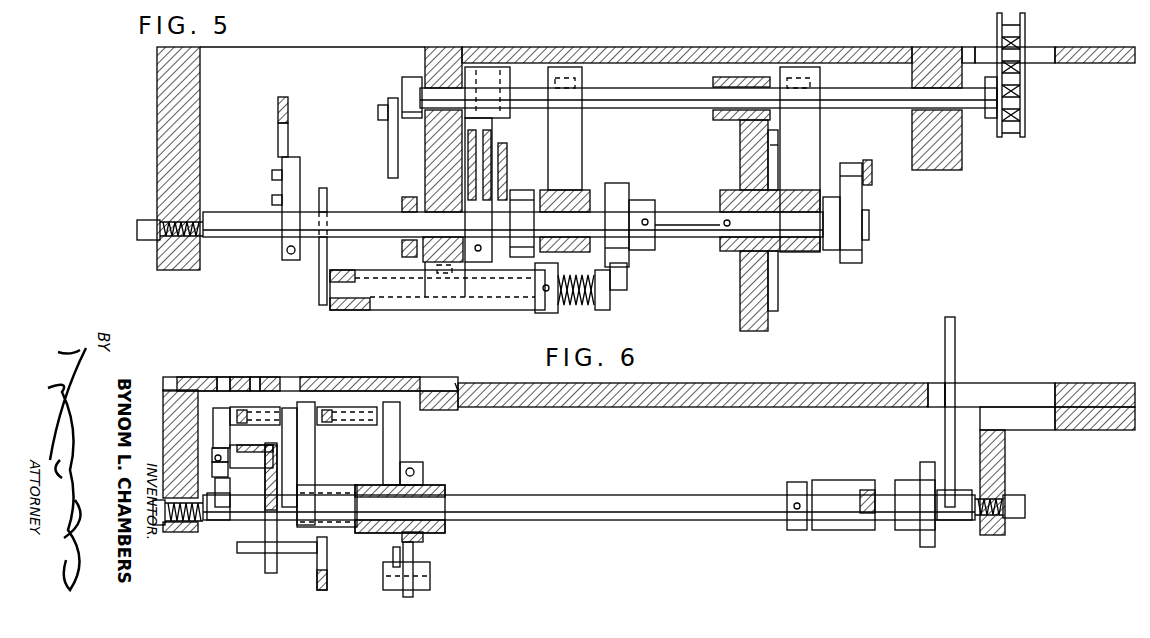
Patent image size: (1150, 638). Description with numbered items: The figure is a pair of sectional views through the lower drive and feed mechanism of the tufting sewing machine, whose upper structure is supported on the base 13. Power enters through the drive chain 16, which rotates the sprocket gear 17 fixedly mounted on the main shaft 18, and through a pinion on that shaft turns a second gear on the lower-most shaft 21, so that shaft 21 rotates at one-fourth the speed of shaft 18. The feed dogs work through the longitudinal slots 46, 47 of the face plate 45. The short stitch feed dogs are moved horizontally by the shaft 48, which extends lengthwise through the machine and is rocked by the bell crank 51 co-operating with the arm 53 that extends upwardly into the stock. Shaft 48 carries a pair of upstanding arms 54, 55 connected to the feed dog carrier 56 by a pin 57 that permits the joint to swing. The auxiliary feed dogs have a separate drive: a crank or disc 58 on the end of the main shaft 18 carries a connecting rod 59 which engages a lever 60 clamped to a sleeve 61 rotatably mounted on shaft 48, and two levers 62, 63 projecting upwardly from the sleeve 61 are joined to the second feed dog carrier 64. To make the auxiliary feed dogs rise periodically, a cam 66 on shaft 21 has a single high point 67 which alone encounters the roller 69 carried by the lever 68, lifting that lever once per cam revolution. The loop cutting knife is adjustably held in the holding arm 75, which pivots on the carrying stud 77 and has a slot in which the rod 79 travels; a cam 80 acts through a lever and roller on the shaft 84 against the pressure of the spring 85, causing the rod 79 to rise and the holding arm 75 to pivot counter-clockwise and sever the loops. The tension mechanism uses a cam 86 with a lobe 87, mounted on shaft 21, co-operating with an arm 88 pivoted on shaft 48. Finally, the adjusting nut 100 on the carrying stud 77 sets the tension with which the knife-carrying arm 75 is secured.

In FIG. 5, the base 13 is at (660, 46).
In FIG. 6, the base 13 is at (781, 383).
In FIG. 5, the drive chain 16 is at (1016, 76).
In FIG. 5, the sprocket gear 17 is at (1027, 18).
In FIG. 5, the shaft 18 is at (638, 110).
In FIG. 5, the shaft 21 is at (688, 238).
In FIG. 6, the face plate 45 is at (456, 383).
In FIG. 6, the longitudinal slot 46 is at (224, 377).
In FIG. 6, the longitudinal slot 47 is at (256, 377).
In FIG. 6, the shaft 48 is at (572, 520).
In FIG. 6, the bell crank 51 is at (950, 520).
In FIG. 6, the arm 53 is at (955, 327).
In FIG. 6, the upstanding arm 54 is at (223, 483).
In FIG. 6, the upstanding arm 55 is at (290, 485).
In FIG. 6, the feed dog carrier 56 is at (240, 425).
In FIG. 6, the pin 57 is at (213, 416).
In FIG. 5, the crank or disc 58 is at (402, 85).
In FIG. 5, the connecting rod 59 is at (388, 147).
In FIG. 6, the connecting rod 59 is at (395, 562).
In FIG. 6, the lever 60 is at (413, 556).
In FIG. 6, the sleeve 61 is at (446, 530).
In FIG. 6, the lever 62 is at (312, 454).
In FIG. 6, the lever 63 is at (400, 428).
In FIG. 6, the feed dog carrier 64 is at (330, 425).
In FIG. 5, the cam 66 is at (546, 188).
In FIG. 5, the high point 67 is at (526, 188).
In FIG. 5, the lever 68 is at (500, 212).
In FIG. 5, the roller 69 is at (512, 185).
In FIG. 5, the holding arm 75 is at (327, 200).
In FIG. 6, the holding arm 75 is at (265, 568).
In FIG. 6, the pivot stud 77 is at (212, 460).
In FIG. 5, the rod 79 is at (319, 270).
In FIG. 6, the rod 79 is at (297, 553).
In FIG. 5, the cam 80 is at (618, 184).
In FIG. 5, the shaft 84 is at (350, 310).
In FIG. 5, the spring 85 is at (582, 310).
In FIG. 5, the cam 86 is at (858, 253).
In FIG. 5, the lobe 87 is at (850, 165).
In FIG. 5, the arm 88 is at (872, 180).
In FIG. 6, the arm 88 is at (866, 530).
In FIG. 6, the adjusting nut 100 is at (212, 448).